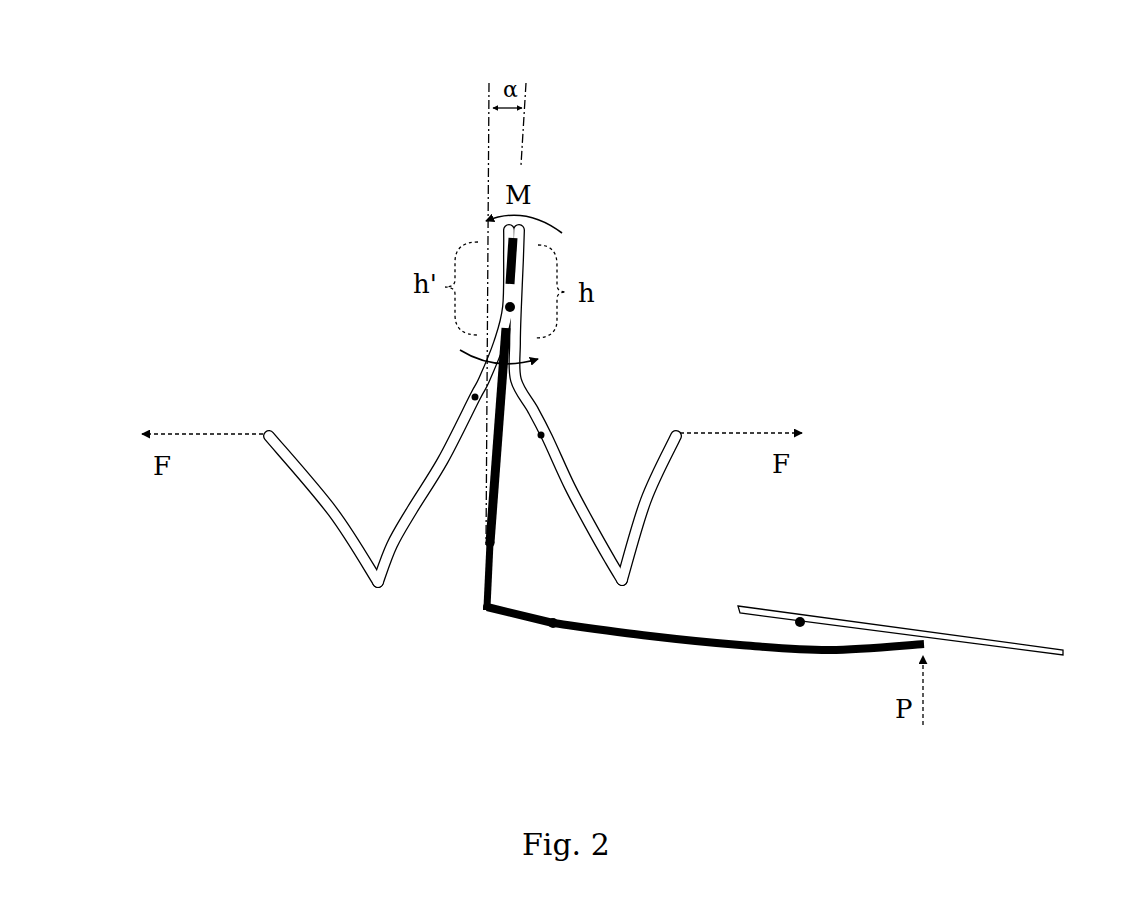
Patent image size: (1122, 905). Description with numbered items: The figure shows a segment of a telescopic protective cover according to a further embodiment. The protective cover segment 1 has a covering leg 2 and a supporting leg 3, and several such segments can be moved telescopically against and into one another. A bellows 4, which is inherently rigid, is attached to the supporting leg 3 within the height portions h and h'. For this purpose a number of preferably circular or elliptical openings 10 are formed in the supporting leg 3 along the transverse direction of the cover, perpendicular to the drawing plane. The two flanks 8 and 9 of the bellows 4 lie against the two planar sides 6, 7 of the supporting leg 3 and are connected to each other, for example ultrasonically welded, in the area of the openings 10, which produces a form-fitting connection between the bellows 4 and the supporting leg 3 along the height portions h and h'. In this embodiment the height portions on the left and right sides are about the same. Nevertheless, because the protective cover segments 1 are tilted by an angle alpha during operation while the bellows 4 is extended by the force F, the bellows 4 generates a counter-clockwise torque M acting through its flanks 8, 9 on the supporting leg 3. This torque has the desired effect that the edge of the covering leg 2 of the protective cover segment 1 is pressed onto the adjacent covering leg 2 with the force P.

The protective cover segment 1 is at (536, 698).
The covering leg 2 is at (554, 618).
The supporting leg 3 is at (488, 543).
The bellows 4 is at (430, 420).
The planar side 6 is at (503, 502).
The planar side 7 is at (492, 472).
The flank 8 is at (541, 435).
The flank 9 is at (475, 397).
The opening 10 is at (514, 307).